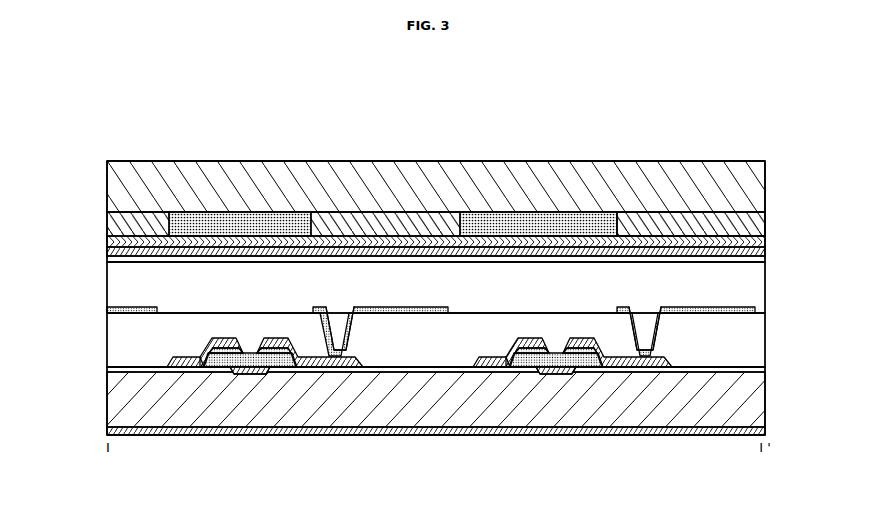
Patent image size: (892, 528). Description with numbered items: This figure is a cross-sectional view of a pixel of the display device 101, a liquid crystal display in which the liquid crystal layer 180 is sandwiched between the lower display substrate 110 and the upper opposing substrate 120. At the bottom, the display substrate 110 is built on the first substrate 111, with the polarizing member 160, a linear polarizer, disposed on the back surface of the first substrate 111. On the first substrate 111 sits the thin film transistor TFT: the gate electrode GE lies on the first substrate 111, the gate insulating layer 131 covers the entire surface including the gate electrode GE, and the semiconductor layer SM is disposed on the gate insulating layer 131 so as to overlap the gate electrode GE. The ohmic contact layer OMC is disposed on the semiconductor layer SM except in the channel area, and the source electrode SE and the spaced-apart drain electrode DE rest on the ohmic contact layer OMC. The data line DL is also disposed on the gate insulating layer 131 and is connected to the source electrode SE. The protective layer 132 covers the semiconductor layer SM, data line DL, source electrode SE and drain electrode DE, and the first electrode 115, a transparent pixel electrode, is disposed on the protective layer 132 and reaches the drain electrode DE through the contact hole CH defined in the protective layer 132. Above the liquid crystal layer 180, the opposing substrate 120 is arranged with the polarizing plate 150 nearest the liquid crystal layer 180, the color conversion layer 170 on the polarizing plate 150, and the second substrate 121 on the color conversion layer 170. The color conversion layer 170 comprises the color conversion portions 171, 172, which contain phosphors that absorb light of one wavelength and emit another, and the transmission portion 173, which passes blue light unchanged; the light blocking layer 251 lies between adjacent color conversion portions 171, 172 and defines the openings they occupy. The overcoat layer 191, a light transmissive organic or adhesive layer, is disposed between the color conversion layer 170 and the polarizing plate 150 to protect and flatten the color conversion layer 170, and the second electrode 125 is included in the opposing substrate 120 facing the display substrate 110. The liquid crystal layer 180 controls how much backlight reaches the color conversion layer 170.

The display device 101 is at (138, 87).
The opposing substrate 120 is at (772, 161).
The second substrate 121 is at (315, 166).
The transmission portion 173 is at (137, 222).
The color conversion layer 170 is at (106, 220).
The light blocking layer 251 is at (249, 222).
The color conversion portion 171 is at (418, 222).
The color conversion portion 172 is at (670, 222).
The overcoat layer 191 is at (113, 241).
The polarizing plate 150 is at (113, 249).
The second electrode 125 is at (705, 256).
The liquid crystal layer 180 is at (752, 284).
The display substrate 110 is at (772, 313).
The first electrode 115 is at (407, 309).
The contact hole CH is at (343, 322).
The gate insulating layer 131 is at (385, 373).
The protective layer 132 is at (430, 356).
The first substrate 111 is at (117, 400).
The polarizing member 160 is at (112, 430).
The data line DL is at (180, 362).
The thin film transistor TFT is at (422, 418).
The semiconductor layer SM is at (272, 358).
The source electrode SE is at (220, 358).
The drain electrode DE is at (284, 352).
The ohmic contact layer OMC is at (213, 362).
The gate electrode GE is at (248, 372).